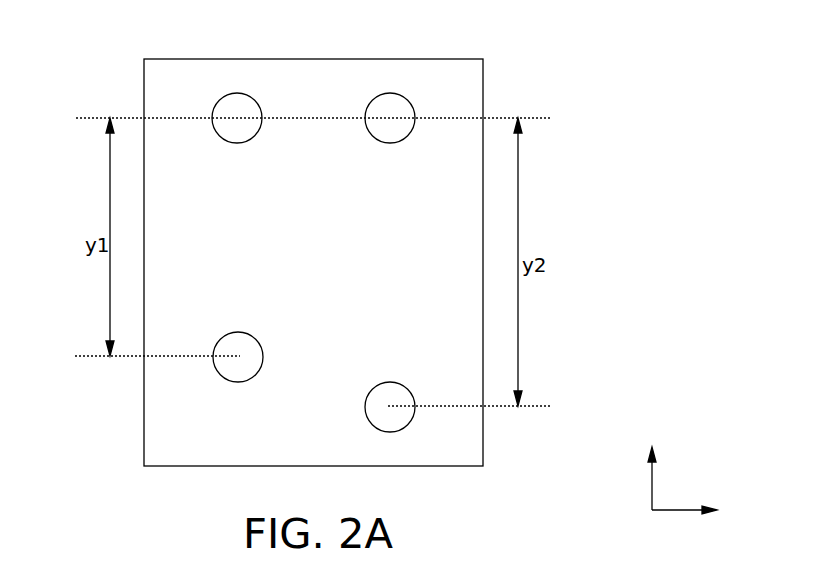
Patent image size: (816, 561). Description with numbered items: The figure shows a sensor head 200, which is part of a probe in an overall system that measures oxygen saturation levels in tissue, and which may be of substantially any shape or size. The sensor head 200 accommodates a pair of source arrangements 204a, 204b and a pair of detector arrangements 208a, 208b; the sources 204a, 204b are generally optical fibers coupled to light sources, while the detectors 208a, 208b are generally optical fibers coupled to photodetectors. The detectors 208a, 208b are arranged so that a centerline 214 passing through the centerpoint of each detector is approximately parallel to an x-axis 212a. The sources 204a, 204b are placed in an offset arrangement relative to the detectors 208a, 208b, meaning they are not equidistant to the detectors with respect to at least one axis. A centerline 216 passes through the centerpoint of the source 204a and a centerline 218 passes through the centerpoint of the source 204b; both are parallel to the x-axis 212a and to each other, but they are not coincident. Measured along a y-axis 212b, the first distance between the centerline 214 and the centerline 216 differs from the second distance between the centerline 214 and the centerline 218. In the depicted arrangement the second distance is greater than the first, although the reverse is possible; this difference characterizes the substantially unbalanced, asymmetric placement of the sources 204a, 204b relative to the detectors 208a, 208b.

The sensor head 200 is at (466, 467).
The source arrangement 204a is at (215, 368).
The source arrangement 204b is at (412, 421).
The detector arrangement 208a is at (214, 108).
The detector arrangement 208b is at (415, 107).
The x-axis 212a is at (688, 509).
The y-axis 212b is at (650, 493).
The centerline 214 is at (540, 122).
The centerline 216 is at (86, 355).
The centerline 218 is at (543, 405).